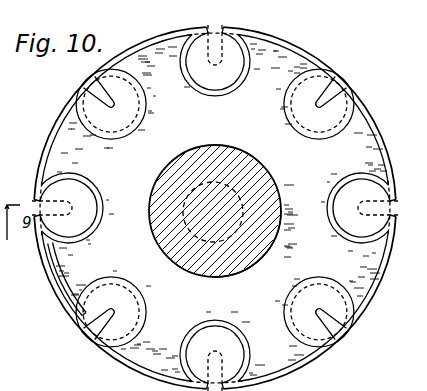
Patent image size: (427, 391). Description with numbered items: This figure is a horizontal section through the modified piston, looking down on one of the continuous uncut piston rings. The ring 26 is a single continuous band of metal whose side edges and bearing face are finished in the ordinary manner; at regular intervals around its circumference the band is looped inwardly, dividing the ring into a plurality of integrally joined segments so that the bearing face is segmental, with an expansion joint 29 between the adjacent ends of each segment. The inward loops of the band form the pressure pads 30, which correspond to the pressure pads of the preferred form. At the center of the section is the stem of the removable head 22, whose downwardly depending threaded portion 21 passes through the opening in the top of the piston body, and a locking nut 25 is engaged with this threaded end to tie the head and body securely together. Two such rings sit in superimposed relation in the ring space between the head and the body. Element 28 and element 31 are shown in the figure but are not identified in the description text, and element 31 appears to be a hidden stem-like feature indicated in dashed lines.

The threaded portion 21 is at (207, 243).
The removable head 22 is at (270, 203).
The locking nut 25 is at (168, 172).
The ring 26 is at (366, 312).
The spring clip 28 is at (89, 317).
The expansion joint 29 is at (334, 230).
The pressure pads 30 is at (137, 294).
The stems 31 is at (228, 334).